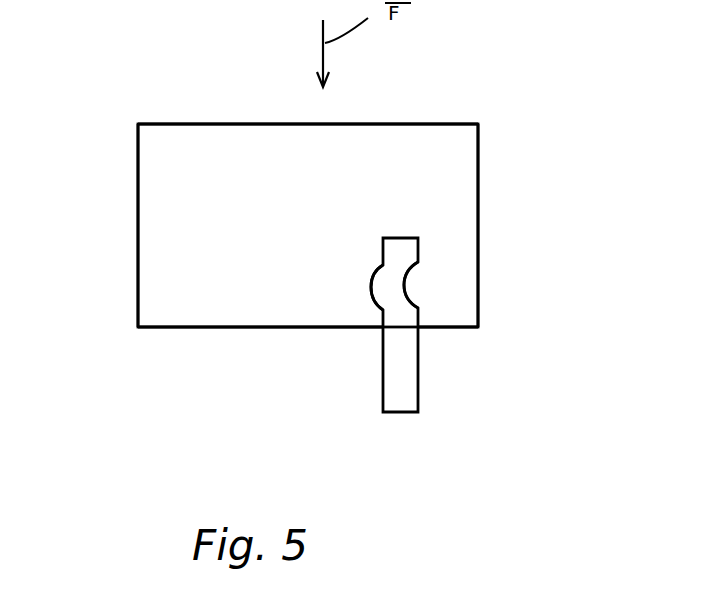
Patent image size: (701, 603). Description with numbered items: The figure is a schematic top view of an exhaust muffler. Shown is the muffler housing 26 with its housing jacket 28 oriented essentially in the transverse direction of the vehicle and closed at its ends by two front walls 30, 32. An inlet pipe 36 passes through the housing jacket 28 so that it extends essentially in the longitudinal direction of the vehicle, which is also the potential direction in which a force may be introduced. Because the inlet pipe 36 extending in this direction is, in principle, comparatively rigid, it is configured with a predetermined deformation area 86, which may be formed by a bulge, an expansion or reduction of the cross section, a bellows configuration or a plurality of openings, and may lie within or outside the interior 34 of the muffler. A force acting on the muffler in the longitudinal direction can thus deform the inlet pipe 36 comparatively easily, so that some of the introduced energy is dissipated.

The muffler housing 26 is at (178, 100).
The housing jacket 28 is at (367, 122).
The front wall 30 is at (478, 173).
The front wall 32 is at (138, 180).
The interior of the muffler 34 is at (245, 288).
The inlet pipe 36 is at (418, 375).
The predetermined deformation area 86 is at (450, 282).